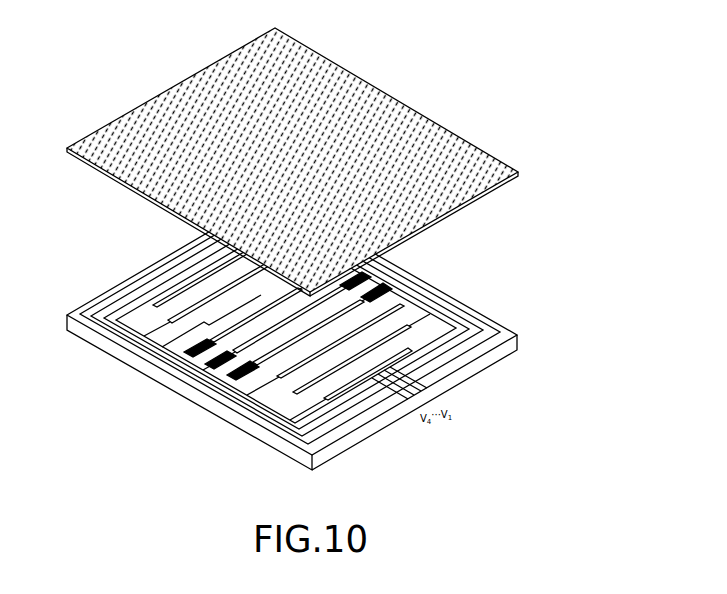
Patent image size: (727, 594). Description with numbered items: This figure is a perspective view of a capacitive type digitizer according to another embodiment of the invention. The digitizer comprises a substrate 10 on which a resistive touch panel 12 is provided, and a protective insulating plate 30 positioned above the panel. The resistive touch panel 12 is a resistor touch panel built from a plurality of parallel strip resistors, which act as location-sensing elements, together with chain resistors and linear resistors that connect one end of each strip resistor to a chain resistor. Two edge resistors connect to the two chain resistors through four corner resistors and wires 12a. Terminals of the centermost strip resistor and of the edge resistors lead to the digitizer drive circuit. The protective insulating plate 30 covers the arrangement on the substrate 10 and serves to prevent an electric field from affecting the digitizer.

The substrate 10 is at (500, 355).
The resistive touch panel 12 is at (467, 325).
The wires 12a is at (472, 307).
The protective insulating plate 30 is at (391, 100).